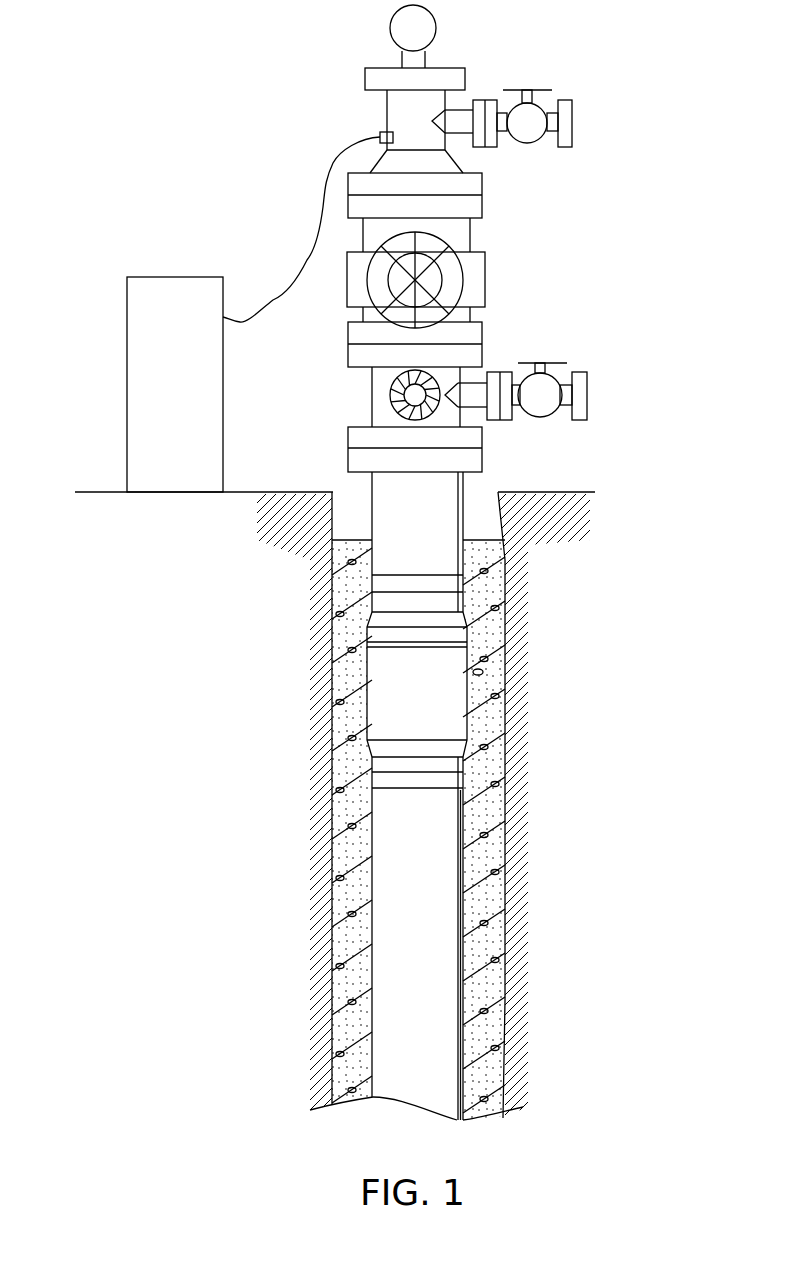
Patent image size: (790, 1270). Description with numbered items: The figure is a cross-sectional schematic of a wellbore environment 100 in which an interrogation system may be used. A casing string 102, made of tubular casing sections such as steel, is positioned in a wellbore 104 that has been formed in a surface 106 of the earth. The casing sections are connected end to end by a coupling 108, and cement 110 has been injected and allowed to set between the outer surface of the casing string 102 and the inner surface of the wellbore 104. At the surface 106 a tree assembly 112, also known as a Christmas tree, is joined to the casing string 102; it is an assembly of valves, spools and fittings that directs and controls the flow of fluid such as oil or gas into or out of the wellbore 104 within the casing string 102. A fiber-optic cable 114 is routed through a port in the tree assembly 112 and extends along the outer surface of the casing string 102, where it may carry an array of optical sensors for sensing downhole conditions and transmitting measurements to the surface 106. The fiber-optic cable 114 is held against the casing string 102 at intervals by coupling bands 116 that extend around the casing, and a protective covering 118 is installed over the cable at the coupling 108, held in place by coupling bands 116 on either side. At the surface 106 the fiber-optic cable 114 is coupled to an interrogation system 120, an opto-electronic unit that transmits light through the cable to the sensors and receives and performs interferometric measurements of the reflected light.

The wellbore environment 100 is at (185, 120).
The casing string 102 is at (445, 497).
The wellbore 104 is at (350, 508).
The surface 106 is at (92, 490).
The coupling 108 is at (447, 712).
The cement 110 is at (490, 983).
The tree assembly 112 is at (612, 2).
The fiber-optic cable 114 is at (317, 233).
The coupling band 116 is at (392, 573).
The protective covering 118 is at (470, 677).
The interrogation system 120 is at (127, 415).